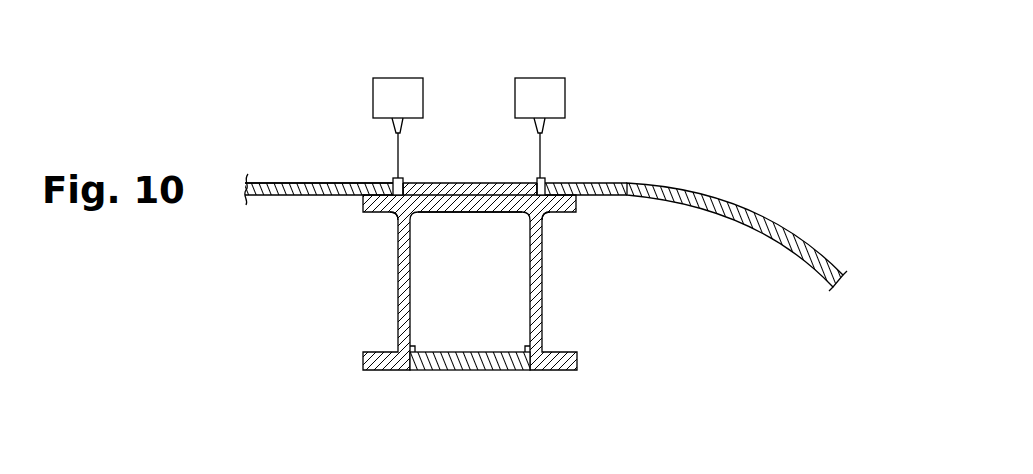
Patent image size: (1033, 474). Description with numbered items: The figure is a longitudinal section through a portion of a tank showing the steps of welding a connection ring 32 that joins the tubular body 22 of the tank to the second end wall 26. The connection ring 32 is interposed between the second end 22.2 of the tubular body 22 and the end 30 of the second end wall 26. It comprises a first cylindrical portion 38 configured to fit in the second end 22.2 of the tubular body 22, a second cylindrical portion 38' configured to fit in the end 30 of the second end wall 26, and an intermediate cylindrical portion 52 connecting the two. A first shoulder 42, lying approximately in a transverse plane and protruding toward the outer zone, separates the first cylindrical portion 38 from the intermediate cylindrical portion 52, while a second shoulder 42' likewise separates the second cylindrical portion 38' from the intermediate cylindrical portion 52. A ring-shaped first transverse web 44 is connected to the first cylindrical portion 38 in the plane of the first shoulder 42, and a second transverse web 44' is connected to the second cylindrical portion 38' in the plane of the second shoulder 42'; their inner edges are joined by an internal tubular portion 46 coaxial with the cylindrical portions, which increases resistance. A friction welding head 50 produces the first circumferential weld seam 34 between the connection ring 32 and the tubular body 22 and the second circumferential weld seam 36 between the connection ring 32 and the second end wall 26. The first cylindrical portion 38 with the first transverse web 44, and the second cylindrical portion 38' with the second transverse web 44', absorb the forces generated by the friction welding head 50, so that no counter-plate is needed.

The tubular body 22 is at (281, 176).
The second end 22.2 is at (320, 183).
The second end wall 26 is at (705, 180).
The end 30 is at (573, 183).
The connection ring 32 is at (465, 160).
The first circumferential weld seam 34 is at (386, 172).
The second circumferential weld seam 36 is at (550, 172).
The first cylindrical portion 38 is at (347, 231).
The second cylindrical portion 38' is at (595, 232).
The first shoulder 42 is at (419, 168).
The second shoulder 42' is at (516, 160).
The first transverse web 44 is at (351, 295).
The second transverse web 44' is at (591, 295).
The internal tubular portion 46 is at (488, 385).
The friction welding head 50 is at (397, 90).
The intermediate cylindrical portion 52 is at (469, 212).